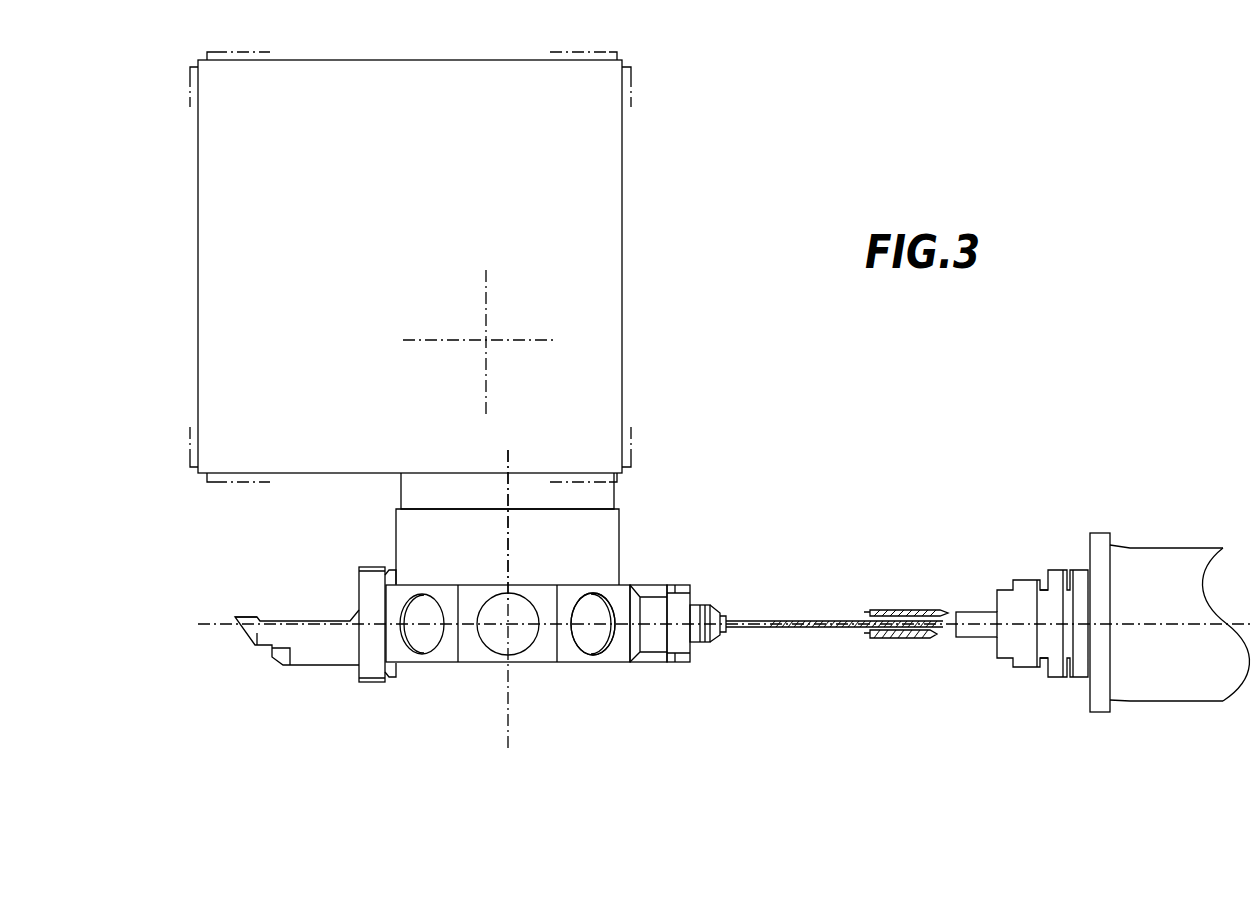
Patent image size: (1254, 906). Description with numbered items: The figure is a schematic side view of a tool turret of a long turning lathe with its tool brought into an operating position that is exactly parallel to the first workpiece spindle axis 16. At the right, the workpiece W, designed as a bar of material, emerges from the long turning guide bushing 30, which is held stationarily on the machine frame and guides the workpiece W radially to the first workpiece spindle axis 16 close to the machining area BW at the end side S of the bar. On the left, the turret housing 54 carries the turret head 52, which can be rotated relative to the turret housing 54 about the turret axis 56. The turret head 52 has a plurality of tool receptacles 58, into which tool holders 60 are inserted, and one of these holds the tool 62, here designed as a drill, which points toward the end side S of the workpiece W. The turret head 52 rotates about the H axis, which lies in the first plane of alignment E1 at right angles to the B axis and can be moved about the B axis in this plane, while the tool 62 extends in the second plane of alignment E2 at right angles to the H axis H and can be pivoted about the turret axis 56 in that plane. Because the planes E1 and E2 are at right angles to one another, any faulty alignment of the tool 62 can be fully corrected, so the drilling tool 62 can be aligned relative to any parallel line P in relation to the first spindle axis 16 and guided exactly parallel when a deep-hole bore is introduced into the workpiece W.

The first workpiece spindle axis 16 is at (1172, 627).
The long turning guide bushing 30 is at (1083, 641).
The turret head 52 is at (563, 632).
The turret housing 54 is at (594, 286).
The turret axis 56 is at (512, 729).
The tool receptacles 58 is at (480, 637).
The tool holders 60 is at (372, 665).
The tool 62 is at (257, 645).
The B axis B is at (490, 343).
The H axis H is at (515, 565).
The first plane of alignment E1 is at (817, 553).
The second plane of alignment E2 is at (222, 622).
The parallel line P is at (963, 618).
The workpiece W is at (982, 617).
The end side S is at (955, 634).
The machining area BW is at (975, 630).